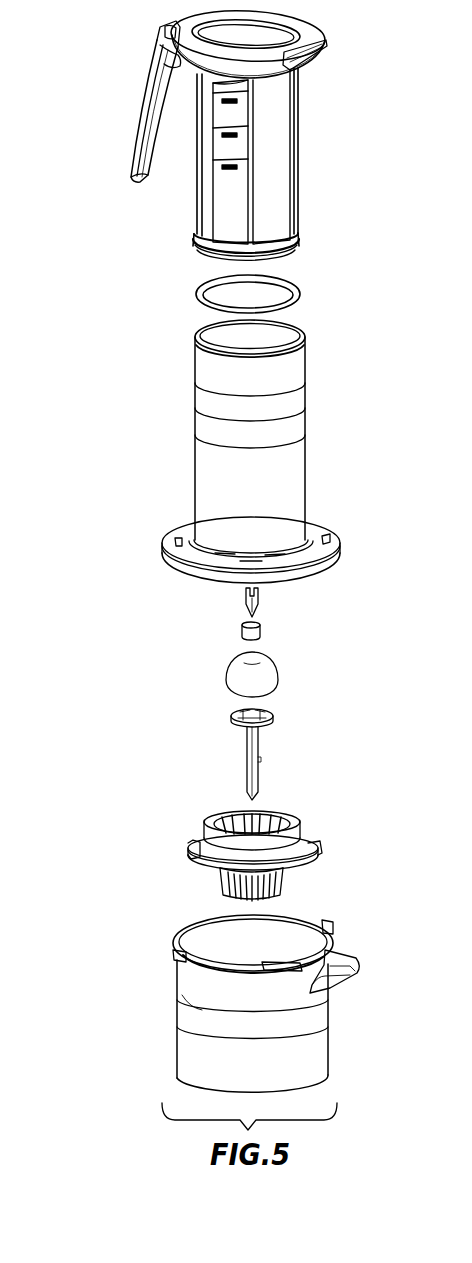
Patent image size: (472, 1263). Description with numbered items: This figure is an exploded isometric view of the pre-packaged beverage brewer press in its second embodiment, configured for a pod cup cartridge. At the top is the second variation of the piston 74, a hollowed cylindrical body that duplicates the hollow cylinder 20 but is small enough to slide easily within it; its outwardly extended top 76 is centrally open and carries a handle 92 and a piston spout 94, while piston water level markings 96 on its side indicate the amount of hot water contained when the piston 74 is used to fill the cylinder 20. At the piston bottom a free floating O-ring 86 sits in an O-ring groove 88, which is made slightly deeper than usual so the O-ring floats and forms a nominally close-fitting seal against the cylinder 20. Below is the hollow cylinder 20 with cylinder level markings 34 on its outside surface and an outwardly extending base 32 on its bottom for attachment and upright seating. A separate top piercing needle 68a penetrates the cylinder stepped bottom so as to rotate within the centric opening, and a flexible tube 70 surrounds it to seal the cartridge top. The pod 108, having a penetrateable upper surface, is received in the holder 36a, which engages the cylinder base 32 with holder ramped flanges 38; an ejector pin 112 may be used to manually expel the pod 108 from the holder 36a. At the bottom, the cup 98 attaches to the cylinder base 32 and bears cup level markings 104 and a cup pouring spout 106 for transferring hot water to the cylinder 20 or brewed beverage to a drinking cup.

The hollow cylinder 20 is at (223, 430).
The outwardly extending base 32 is at (162, 551).
The cylinder level markings 34 is at (213, 388).
The holder 36a is at (229, 848).
The holder ramped flanges 38 is at (330, 838).
The top piercing needle 68a is at (260, 602).
The flexible tube 70 is at (240, 632).
The piston 74 is at (218, 135).
The outwardly extended top 76 is at (300, 8).
The free floating O-ring 86 is at (300, 295).
The O-ring groove 88 is at (300, 250).
The handle 92 is at (152, 68).
The piston spout 94 is at (333, 45).
The piston water level markings 96 is at (237, 158).
The cup 98 is at (247, 1007).
The cup level markings 104 is at (190, 1015).
The cup pouring spout 106 is at (350, 956).
The pod 108 is at (283, 668).
The ejector pin 112 is at (238, 757).